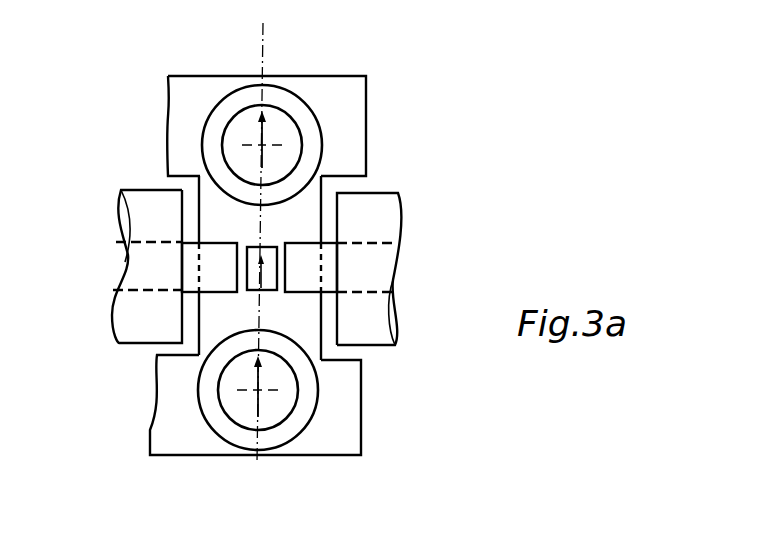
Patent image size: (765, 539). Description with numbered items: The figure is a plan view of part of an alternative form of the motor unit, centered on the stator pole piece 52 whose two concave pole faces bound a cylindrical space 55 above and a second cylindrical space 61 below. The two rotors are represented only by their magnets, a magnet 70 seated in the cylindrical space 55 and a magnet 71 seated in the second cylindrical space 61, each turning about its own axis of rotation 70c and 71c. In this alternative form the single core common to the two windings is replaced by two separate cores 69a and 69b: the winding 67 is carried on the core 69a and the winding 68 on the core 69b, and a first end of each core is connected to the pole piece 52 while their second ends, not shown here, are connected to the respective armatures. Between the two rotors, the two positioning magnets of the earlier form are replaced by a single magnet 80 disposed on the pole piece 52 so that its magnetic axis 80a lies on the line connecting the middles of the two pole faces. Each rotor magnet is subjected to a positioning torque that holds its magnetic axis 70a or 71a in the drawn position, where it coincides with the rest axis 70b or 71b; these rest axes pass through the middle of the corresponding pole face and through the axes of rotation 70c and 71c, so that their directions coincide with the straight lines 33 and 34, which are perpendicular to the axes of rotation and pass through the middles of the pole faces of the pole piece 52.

The straight line 33 is at (263, 72).
The straight line 34 is at (257, 462).
The pole piece 52 is at (297, 298).
The cylindrical space 55 is at (245, 96).
The second cylindrical space 61 is at (215, 417).
The winding 67 is at (140, 213).
The winding 68 is at (388, 220).
The core 69a is at (211, 254).
The core 69b is at (306, 258).
The magnet 70 is at (292, 137).
The magnetic axis 70a is at (268, 132).
The rest axis 70b is at (262, 145).
The axis of rotation 70c is at (252, 144).
The magnet 71 is at (283, 400).
The magnetic axis 71a is at (258, 400).
The rest axis 71b is at (258, 390).
The axis of rotation 71c is at (255, 393).
The magnet 80 is at (266, 282).
The magnetic axis 80a is at (260, 270).